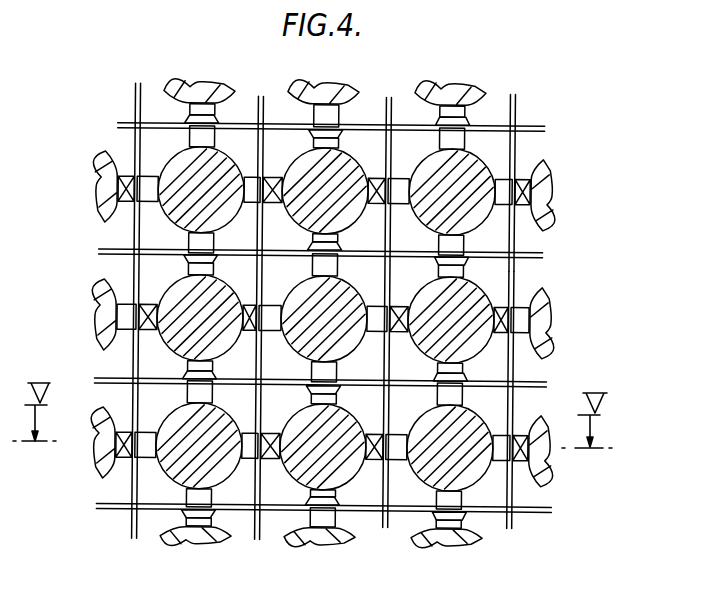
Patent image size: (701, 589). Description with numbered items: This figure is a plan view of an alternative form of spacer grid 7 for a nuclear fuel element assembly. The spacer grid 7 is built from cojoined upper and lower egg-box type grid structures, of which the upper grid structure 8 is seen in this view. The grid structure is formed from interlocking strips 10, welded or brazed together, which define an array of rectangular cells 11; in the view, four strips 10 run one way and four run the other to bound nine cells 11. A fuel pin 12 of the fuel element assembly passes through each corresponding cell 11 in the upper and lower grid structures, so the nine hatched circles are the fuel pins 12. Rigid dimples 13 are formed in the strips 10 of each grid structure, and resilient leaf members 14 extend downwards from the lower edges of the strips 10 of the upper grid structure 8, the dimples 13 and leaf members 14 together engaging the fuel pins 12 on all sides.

The spacer grid 7 is at (502, 140).
The upper grid structure 8 is at (518, 147).
The interlocking strips 10 is at (514, 397).
The rectangular cells 11 is at (140, 373).
The fuel pins 12 is at (345, 163).
The rigid dimples 13 is at (165, 260).
The resilient leaf members 14 is at (342, 258).